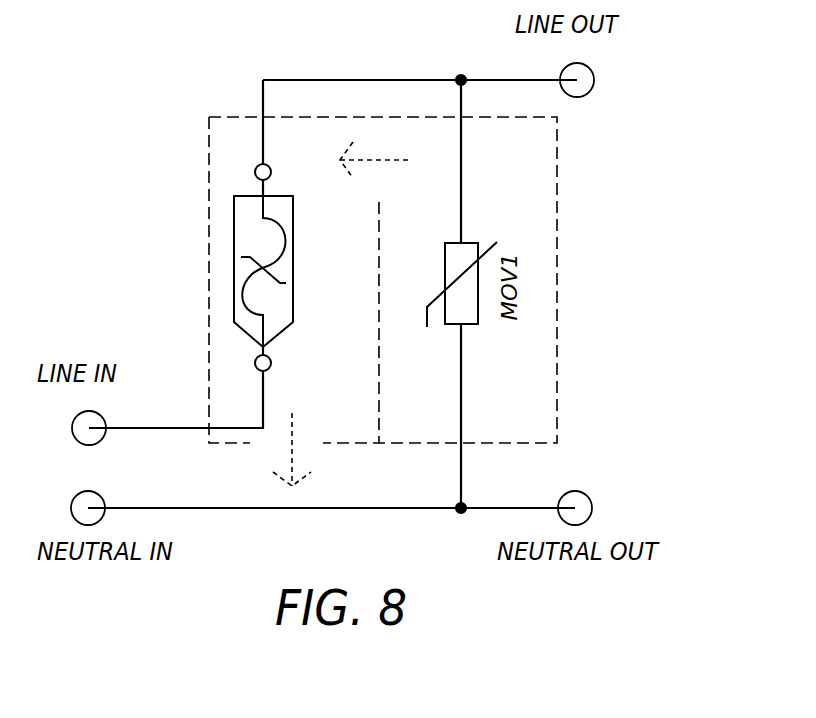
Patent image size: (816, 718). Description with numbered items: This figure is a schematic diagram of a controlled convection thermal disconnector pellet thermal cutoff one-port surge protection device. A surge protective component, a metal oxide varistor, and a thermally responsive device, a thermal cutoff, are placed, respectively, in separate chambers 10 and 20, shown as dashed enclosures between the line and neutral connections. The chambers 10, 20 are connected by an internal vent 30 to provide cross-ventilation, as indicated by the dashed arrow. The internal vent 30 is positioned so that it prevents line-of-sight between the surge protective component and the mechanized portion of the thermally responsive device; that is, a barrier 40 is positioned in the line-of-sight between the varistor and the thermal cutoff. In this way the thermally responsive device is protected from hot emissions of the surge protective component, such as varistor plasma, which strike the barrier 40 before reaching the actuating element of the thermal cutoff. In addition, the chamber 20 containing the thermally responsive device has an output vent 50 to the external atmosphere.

The chamber 10 is at (552, 398).
The chamber 20 is at (215, 337).
The internal vent 30 is at (383, 155).
The barrier 40 is at (380, 412).
The output vent 50 is at (268, 438).